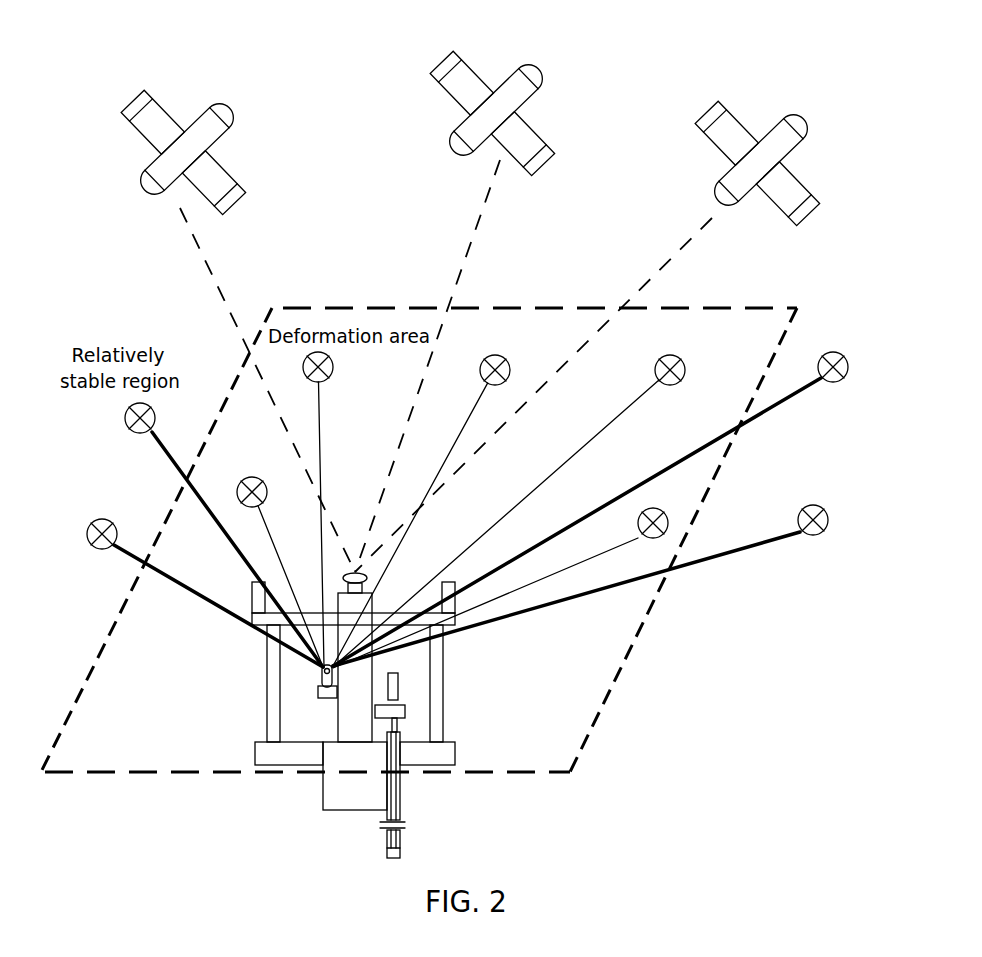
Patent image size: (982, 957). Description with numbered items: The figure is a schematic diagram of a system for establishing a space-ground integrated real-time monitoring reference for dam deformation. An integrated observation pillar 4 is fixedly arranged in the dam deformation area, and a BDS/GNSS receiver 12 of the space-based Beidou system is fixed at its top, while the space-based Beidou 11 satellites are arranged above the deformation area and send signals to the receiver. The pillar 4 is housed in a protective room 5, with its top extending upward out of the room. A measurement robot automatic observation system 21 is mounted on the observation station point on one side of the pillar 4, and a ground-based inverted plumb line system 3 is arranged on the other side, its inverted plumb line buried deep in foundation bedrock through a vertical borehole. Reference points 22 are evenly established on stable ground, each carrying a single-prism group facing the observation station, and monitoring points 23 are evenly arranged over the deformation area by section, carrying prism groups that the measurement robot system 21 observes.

The space-based Beidou 11 is at (542, 68).
The monitoring point 23 is at (682, 362).
The reference point 22 is at (464, 509).
The BDS/GNSS receiver 12 is at (343, 583).
The protective room 5 is at (267, 683).
The measurement robot automatic observation system 21 is at (320, 689).
The integrated observation pillar 4 is at (330, 798).
The ground-based inverted plumb line system 3 is at (398, 690).